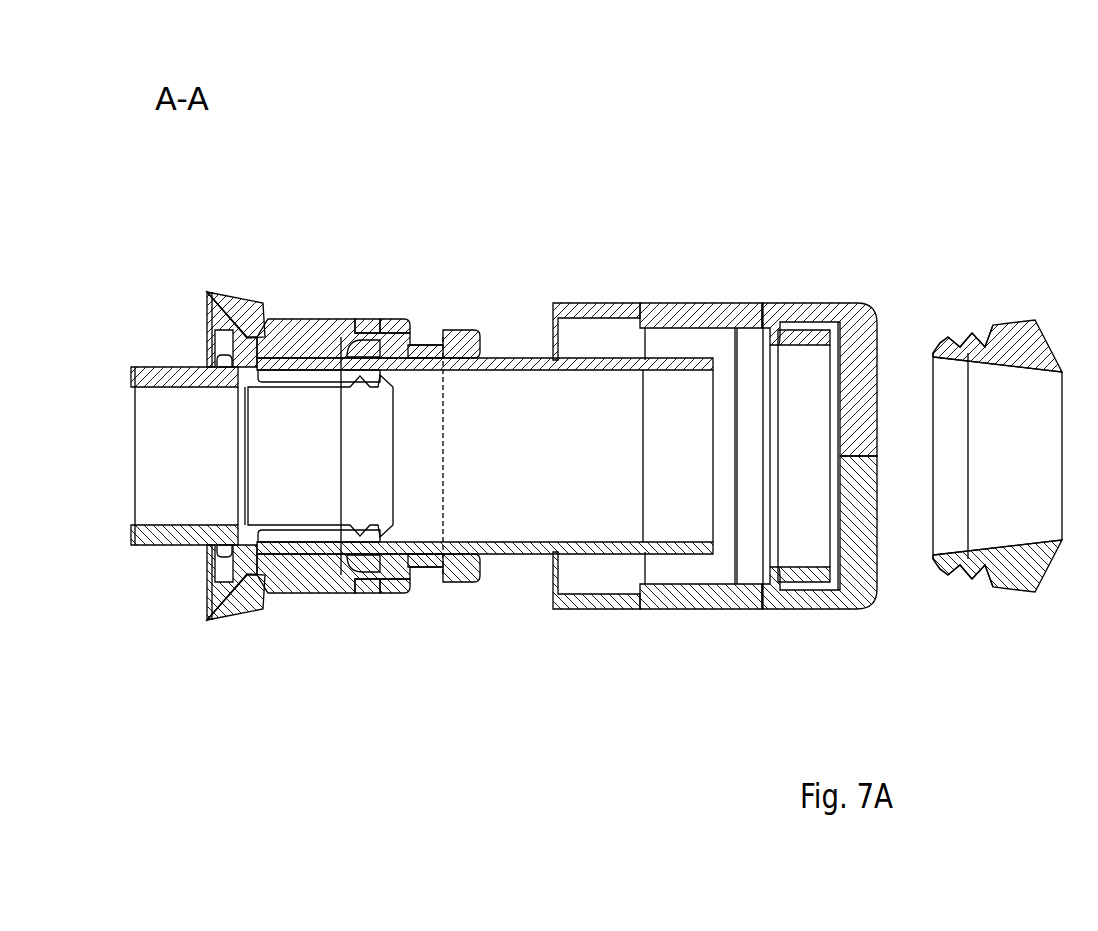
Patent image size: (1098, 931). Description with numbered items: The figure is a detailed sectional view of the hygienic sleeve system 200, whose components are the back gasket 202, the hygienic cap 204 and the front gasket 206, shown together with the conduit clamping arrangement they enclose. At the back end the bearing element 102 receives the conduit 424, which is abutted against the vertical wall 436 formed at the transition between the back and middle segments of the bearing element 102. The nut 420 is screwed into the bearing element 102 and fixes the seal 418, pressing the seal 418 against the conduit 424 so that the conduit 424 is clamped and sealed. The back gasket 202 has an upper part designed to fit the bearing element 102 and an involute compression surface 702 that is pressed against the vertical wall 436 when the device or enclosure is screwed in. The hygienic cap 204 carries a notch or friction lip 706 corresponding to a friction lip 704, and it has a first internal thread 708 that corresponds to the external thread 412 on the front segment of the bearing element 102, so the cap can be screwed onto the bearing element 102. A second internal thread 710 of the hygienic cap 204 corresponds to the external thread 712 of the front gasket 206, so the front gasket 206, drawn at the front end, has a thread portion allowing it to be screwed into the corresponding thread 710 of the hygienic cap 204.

The bearing element 102 is at (180, 367).
The hygienic sleeve system 200 is at (898, 188).
The back gasket 202 is at (242, 298).
The hygienic cap 204 is at (660, 303).
The front gasket 206 is at (998, 292).
The external thread 412 is at (383, 317).
The seal 418 is at (360, 568).
The nut 420 is at (457, 580).
The conduit 424 is at (530, 550).
The vertical wall 436 is at (210, 375).
The involute compression surface 702 is at (205, 315).
The friction lip 704 is at (353, 320).
The friction lip 706 is at (640, 318).
The first internal thread 708 is at (710, 323).
The second internal thread 710 is at (817, 334).
The external thread 712 is at (968, 333).